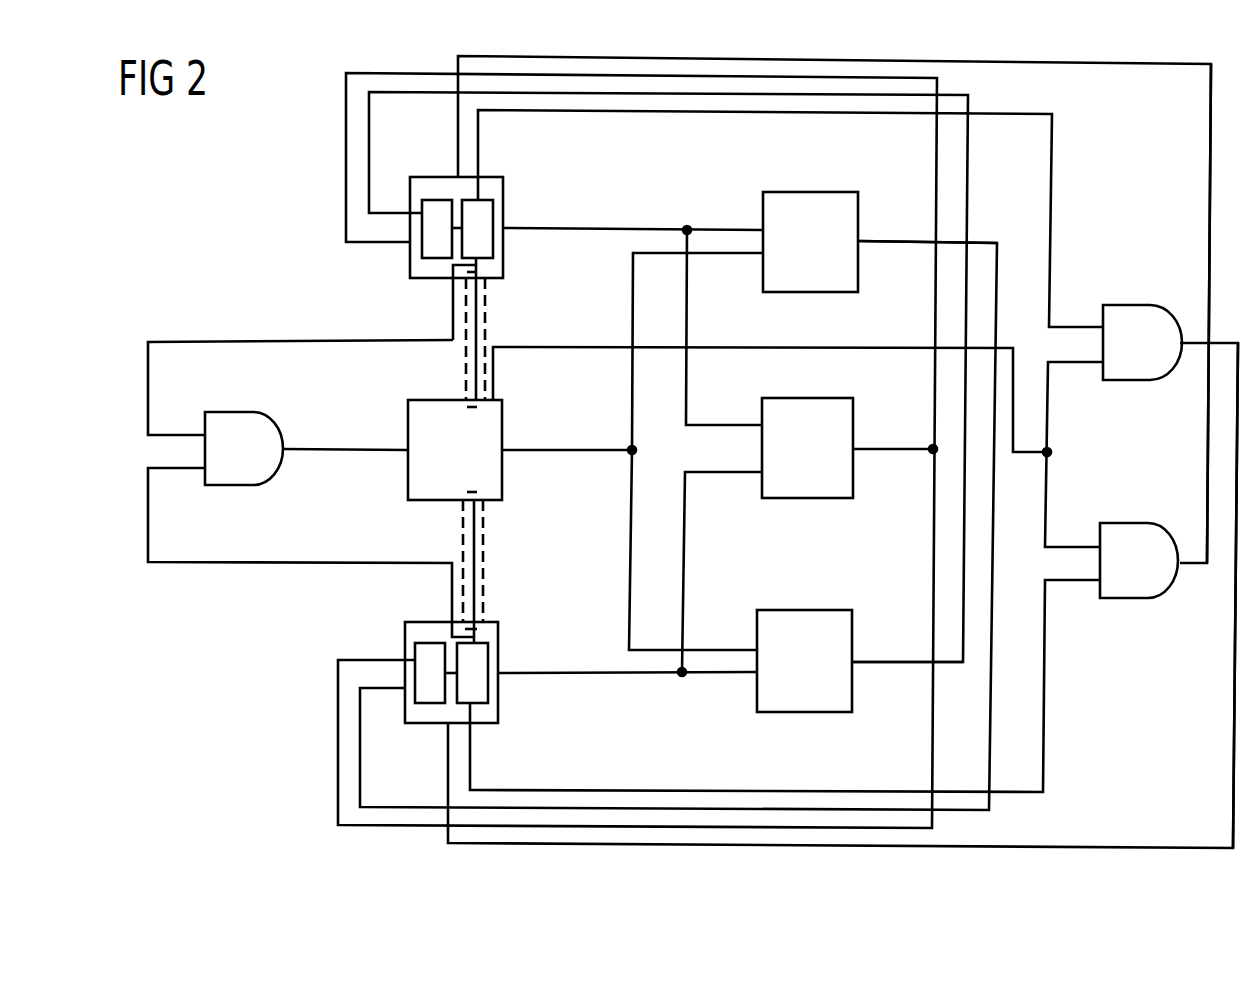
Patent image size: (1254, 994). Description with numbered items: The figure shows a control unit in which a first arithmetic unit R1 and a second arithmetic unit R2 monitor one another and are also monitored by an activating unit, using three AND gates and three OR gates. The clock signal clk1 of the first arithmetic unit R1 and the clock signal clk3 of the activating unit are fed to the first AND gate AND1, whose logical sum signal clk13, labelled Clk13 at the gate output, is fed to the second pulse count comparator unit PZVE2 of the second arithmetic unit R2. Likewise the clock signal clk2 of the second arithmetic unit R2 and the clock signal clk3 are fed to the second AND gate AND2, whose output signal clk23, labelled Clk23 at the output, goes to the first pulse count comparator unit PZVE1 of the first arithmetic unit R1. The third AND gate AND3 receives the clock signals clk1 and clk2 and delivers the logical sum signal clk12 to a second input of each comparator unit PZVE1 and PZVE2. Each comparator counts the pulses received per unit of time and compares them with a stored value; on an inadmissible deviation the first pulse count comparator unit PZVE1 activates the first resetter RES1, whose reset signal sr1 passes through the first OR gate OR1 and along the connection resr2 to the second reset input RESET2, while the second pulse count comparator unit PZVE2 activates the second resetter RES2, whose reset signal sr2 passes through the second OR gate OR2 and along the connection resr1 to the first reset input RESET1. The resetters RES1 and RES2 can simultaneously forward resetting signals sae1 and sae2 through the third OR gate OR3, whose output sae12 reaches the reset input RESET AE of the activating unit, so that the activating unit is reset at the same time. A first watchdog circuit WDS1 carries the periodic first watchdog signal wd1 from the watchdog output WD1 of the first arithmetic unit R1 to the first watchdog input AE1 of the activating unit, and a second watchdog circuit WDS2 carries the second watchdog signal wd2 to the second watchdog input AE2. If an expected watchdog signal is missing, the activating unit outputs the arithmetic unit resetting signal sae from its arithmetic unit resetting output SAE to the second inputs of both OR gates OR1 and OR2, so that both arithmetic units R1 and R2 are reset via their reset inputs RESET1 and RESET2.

The first arithmetic unit R1 is at (503, 250).
The first pulse count comparator unit PZVE1 is at (440, 200).
The first resetter RES1 is at (503, 212).
The first reset input RESET1 is at (458, 177).
The first reset signal sr1 is at (1075, 327).
The clock signal of the first arithmetic unit clk1 is at (632, 230).
The first watchdog signal wd1 is at (453, 307).
The first watchdog circuit WDS1 is at (465, 327).
The watchdog output of the first arithmetic unit WD1 is at (485, 287).
The first watchdog input AE1 is at (467, 392).
The arithmetic unit resetting output SAE is at (493, 398).
The arithmetic unit resetting signal sae is at (1048, 405).
The resetting signal of the first resetter sae1 is at (148, 382).
The further resetting signal of the second resetter sae2 is at (148, 516).
The third OR gate OR3 is at (228, 485).
The combined activation signal of OR3 sae12 is at (297, 450).
The reset input of the activating unit RESET AE is at (407, 448).
The clock signal of the activating unit clk3 is at (575, 450).
The second watchdog signal wd2 is at (483, 518).
The second watchdog circuit WDS2 is at (463, 592).
The second watchdog input AE2 is at (483, 615).
The second arithmetic unit R2 is at (405, 640).
The second pulse count comparator unit PZVE2 is at (430, 703).
The second resetter RES2 is at (498, 693).
The clock signal of the second arithmetic unit clk2 is at (568, 673).
The second reset input RESET2 is at (453, 725).
The second reset signal sr2 is at (1077, 580).
The first AND gate AND1 is at (810, 192).
The logical sum signal of clock signals clk1 and clk3 Clk13 is at (898, 222).
The logical sum signal of clock signals clk1 and clk3 clk13 is at (900, 241).
The output signal of the third AND gate clk12 is at (880, 449).
The third AND gate AND3 is at (808, 498).
The logical sum signal of clock signals clk2 and clk3 Clk23 is at (890, 637).
The logical sum signal of clock signals clk2 and clk3 clk23 is at (895, 662).
The second AND gate AND2 is at (805, 712).
The first OR gate OR1 is at (1133, 305).
The second OR gate OR2 is at (1130, 598).
The first reset result signal resr1 is at (1211, 157).
The second reset result signal resr2 is at (1233, 738).